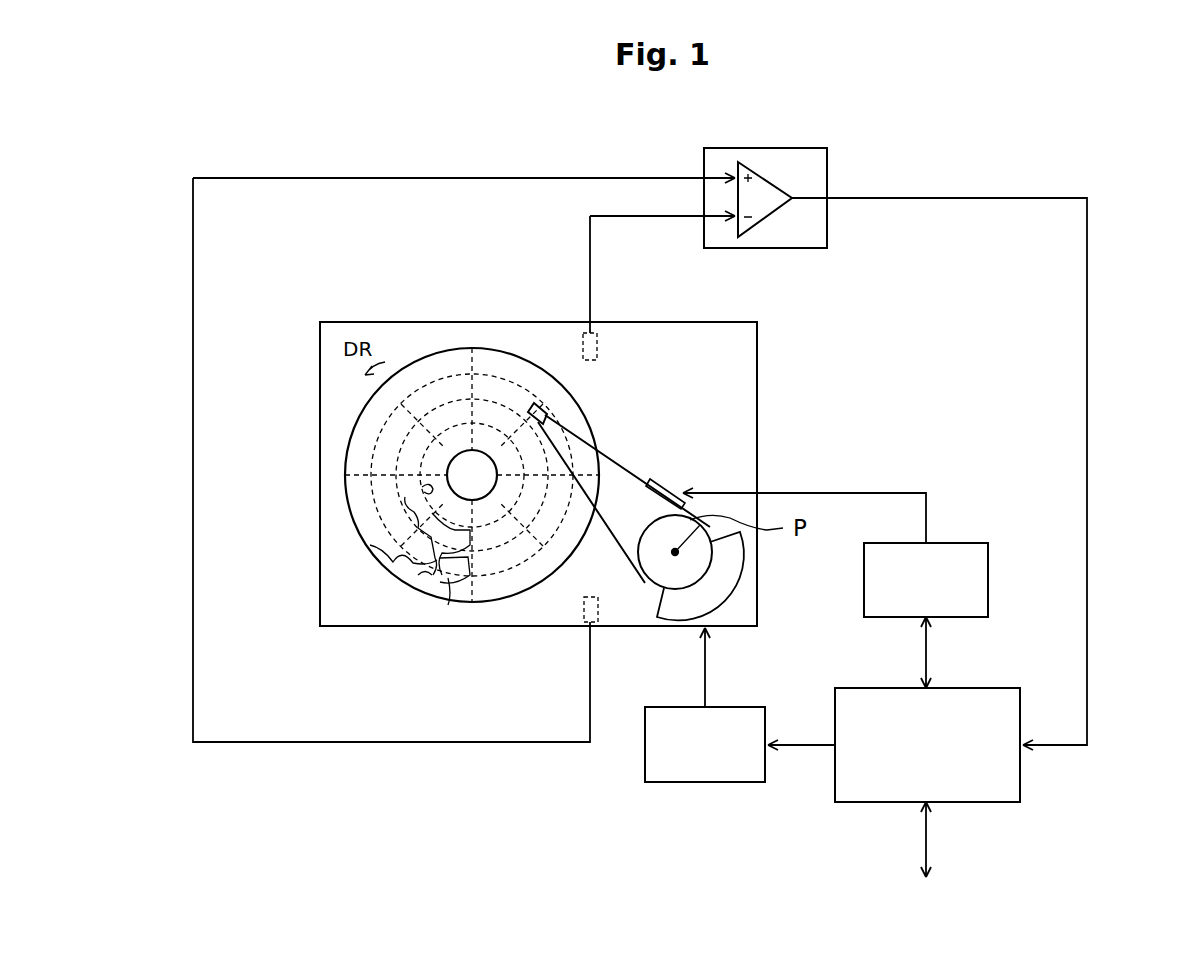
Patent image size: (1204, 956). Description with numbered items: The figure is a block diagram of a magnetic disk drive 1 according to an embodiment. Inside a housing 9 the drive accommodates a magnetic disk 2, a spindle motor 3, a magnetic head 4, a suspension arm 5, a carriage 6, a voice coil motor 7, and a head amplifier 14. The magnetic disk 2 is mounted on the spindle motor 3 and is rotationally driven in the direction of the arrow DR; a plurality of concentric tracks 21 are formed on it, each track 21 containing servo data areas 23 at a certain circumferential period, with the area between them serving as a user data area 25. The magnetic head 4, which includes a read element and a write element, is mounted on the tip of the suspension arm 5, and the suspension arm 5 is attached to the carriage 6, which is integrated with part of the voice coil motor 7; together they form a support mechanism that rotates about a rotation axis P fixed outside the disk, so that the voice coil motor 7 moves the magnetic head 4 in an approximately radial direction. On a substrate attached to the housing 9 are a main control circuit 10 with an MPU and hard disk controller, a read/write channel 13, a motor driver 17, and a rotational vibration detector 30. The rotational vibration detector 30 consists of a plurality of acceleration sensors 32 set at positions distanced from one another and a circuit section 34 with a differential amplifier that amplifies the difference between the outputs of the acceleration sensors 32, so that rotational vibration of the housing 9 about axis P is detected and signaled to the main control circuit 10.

The magnetic disk drive 1 is at (1135, 321).
The magnetic disk 2 is at (430, 365).
The spindle motor 3 is at (465, 465).
The magnetic head 4 is at (532, 400).
The suspension arm 5 is at (603, 452).
The carriage 6 is at (622, 528).
The voice coil motor 7 is at (645, 612).
The housing 9 is at (757, 383).
The main control circuit 10 is at (995, 688).
The read/write channel 13 is at (962, 543).
The head amplifier 14 is at (647, 483).
The motor driver 17 is at (760, 707).
The tracks 21 is at (422, 487).
The servo data area 23 is at (370, 545).
The user data area 25 is at (418, 578).
The rotational vibration detector 30 is at (786, 235).
The acceleration sensors 32 is at (600, 345).
The circuit section 34 is at (723, 250).